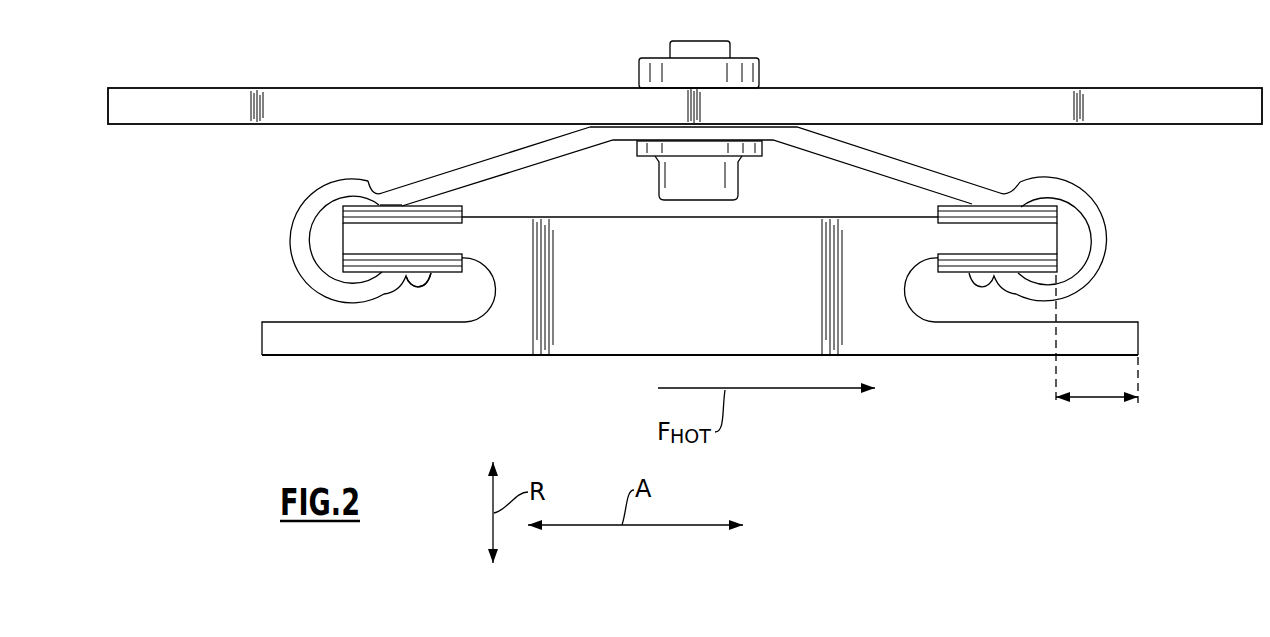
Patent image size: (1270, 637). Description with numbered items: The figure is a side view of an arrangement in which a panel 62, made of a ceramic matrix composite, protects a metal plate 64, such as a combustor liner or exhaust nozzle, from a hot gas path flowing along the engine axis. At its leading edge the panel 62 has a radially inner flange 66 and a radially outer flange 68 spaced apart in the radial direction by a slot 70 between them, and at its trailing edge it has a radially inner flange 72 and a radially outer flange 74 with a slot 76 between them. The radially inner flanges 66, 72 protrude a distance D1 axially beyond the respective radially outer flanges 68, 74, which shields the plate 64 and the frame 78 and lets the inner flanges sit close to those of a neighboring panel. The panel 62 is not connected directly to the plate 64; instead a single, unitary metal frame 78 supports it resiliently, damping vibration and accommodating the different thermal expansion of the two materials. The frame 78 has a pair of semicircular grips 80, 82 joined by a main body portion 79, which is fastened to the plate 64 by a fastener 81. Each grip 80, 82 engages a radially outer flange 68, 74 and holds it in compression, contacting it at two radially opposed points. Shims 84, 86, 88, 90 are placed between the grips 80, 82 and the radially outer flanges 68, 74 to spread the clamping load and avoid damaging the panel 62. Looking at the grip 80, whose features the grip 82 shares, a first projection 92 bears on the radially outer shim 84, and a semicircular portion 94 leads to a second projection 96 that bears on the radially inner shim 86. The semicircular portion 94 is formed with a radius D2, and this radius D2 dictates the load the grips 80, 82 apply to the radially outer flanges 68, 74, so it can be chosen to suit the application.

The panel 62 is at (511, 360).
The plate 64 is at (434, 86).
The radially inner flange 66 is at (262, 340).
The radially outer flange 68 is at (345, 247).
The slot 70 is at (454, 314).
The radially inner flange 72 is at (1138, 338).
The radially outer flange 74 is at (1058, 240).
The slot 76 is at (949, 314).
The frame 78 is at (694, 131).
The main body portion 79 is at (585, 138).
The grip 80 is at (324, 220).
The fastener 81 is at (731, 50).
The grip 82 is at (1085, 182).
The radially outer shim 84 is at (392, 214).
The radially inner shim 86 is at (338, 265).
The shim 88 is at (937, 210).
The shim 90 is at (962, 275).
The first projection 92 is at (402, 203).
The semicircular portion 94 is at (318, 200).
The second projection 96 is at (403, 278).
The distance D1 is at (1097, 398).
The radius D2 is at (328, 219).